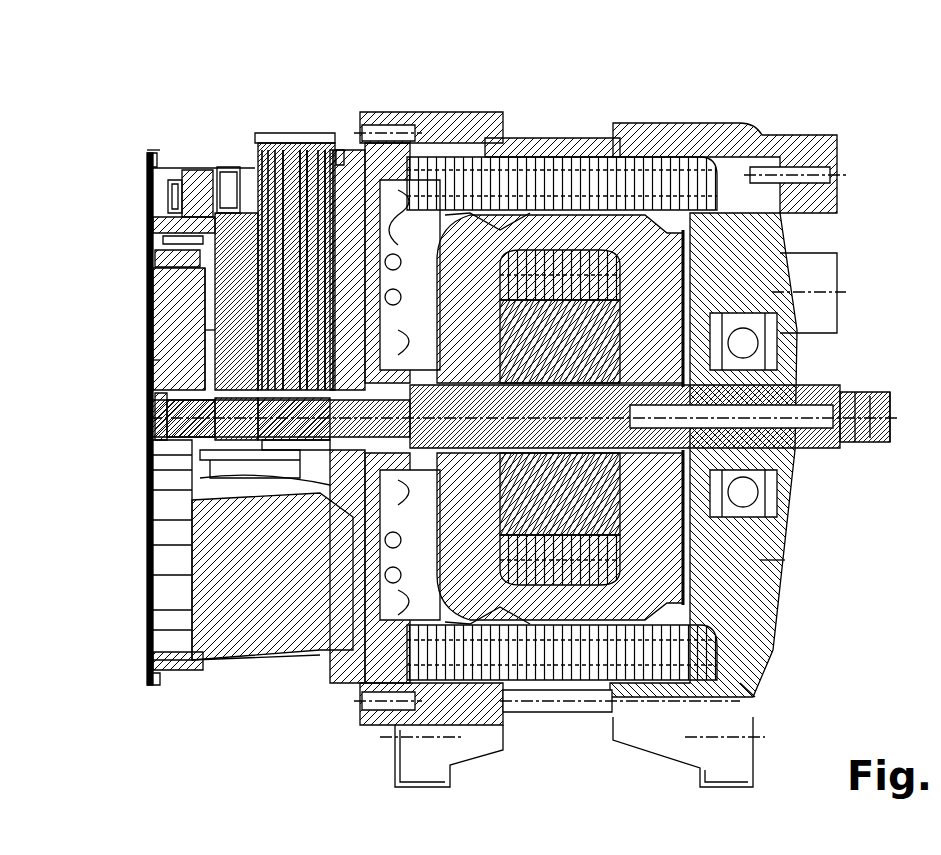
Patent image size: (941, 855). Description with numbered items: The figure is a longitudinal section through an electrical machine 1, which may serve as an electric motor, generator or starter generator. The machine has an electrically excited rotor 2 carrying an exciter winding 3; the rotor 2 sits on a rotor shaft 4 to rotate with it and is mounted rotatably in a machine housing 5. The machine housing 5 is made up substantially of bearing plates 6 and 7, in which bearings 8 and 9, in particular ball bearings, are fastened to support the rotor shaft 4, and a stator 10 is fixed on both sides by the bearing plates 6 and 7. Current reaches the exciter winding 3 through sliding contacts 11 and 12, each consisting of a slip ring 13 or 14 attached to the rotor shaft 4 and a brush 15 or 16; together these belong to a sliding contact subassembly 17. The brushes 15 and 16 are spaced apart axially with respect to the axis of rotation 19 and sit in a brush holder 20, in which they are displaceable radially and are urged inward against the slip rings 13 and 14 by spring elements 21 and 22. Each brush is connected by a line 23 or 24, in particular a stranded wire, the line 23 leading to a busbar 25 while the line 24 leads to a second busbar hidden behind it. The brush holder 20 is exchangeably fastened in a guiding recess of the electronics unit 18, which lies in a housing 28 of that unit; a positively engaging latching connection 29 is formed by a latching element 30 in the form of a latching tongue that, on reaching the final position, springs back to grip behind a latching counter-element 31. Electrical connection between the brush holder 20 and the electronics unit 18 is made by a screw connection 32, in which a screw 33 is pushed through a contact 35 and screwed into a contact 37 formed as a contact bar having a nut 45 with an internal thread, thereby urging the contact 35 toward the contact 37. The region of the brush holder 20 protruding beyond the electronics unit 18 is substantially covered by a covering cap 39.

The electrical machine 1 is at (567, 102).
The rotor 2 is at (668, 217).
The exciter winding 3 is at (598, 272).
The rotor shaft 4 is at (800, 380).
The machine housing 5 is at (760, 118).
The bearing plate 6 is at (330, 640).
The bearing plate 7 is at (770, 603).
The bearing 8 is at (250, 520).
The bearing 9 is at (748, 500).
The stator 10 is at (762, 690).
The sliding contact 11 is at (215, 438).
The sliding contact 12 is at (262, 462).
The slip ring 13 is at (300, 480).
The slip ring 14 is at (330, 500).
The brush 15 is at (160, 395).
The brush 16 is at (168, 420).
The sliding contact subassembly 17 is at (270, 110).
The electronics unit 18 is at (166, 148).
The axis of rotation 19 is at (906, 406).
The brush holder 20 is at (205, 256).
The spring element 21 is at (240, 300).
The spring element 22 is at (205, 340).
The line 23 is at (258, 272).
The line 24 is at (148, 367).
The busbar 25 is at (305, 134).
The housing 28 is at (160, 231).
The latching connection 29 is at (316, 130).
The latching element 30 is at (347, 128).
The latching counter-element 31 is at (333, 136).
The screw connection 32 is at (106, 162).
The screw 33 is at (170, 197).
The contact 35 is at (198, 172).
The contact 37 is at (252, 132).
The covering cap 39 is at (236, 148).
The nut 45 is at (229, 186).